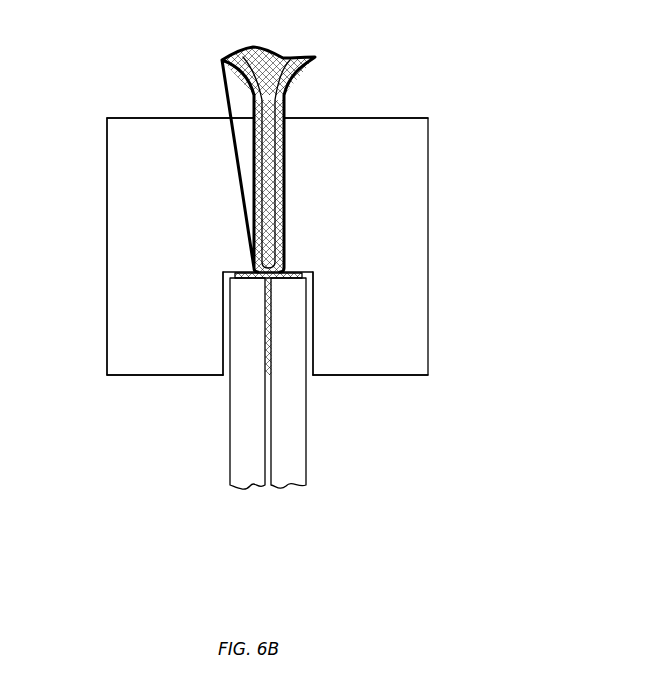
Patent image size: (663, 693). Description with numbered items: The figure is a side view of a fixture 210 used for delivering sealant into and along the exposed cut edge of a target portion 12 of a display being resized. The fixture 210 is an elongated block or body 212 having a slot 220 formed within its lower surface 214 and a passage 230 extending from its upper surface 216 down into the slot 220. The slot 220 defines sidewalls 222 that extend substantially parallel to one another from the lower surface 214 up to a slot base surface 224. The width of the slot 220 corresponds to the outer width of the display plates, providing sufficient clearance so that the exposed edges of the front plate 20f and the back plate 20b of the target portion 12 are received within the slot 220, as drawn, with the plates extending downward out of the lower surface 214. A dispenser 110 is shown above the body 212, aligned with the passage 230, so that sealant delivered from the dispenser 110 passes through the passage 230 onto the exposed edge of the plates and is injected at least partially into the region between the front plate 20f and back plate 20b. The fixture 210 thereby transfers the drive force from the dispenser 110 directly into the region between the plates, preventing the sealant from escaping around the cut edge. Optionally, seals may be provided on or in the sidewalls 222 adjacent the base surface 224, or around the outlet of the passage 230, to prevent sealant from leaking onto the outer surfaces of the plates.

The dispenser 110 is at (193, 50).
The fixture 210 is at (480, 144).
The body 212 is at (107, 247).
The lower surface 214 is at (122, 376).
The upper surface 216 is at (372, 118).
The slot 220 is at (313, 310).
The sidewalls 222 is at (222, 335).
The slot base surface 224 is at (228, 272).
The passage 230 is at (285, 200).
The front plate 20f is at (230, 432).
The back plate 20b is at (306, 422).
The target portion 12 is at (183, 494).